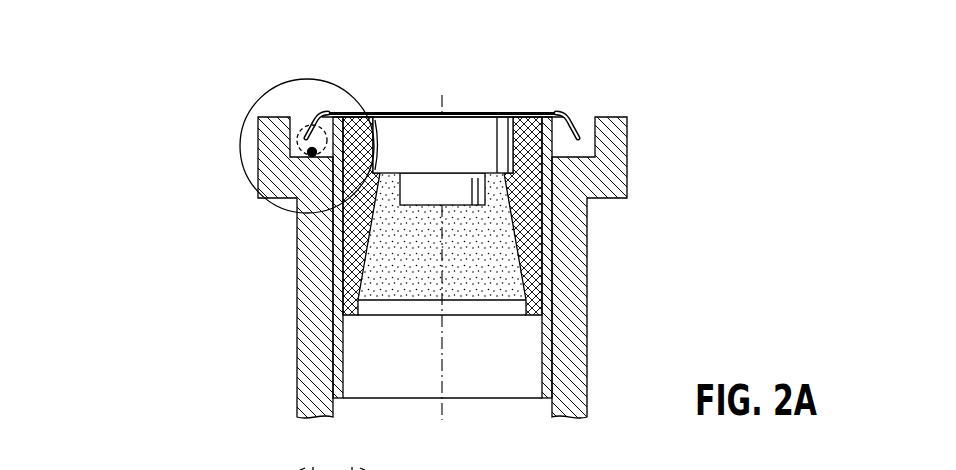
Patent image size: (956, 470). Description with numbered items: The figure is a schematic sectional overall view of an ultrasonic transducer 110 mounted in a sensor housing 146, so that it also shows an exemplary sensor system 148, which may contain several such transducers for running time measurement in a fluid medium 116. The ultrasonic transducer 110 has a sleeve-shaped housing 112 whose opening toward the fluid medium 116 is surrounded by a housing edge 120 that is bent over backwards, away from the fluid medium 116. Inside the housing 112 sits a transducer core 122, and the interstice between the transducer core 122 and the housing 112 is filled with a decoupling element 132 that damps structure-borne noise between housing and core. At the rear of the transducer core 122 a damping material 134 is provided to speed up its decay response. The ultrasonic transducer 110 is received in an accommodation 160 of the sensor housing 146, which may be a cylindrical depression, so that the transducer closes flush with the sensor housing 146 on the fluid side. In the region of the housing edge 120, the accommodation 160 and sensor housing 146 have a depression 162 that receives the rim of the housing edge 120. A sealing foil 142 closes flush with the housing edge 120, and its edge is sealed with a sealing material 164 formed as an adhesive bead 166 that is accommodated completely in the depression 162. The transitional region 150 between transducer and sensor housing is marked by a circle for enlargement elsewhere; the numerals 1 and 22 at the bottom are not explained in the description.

The fuel injection valve 1 is at (332, 460).
The valve element 22 is at (332, 468).
The ultrasonic transducer 110 is at (656, 108).
The housing 112 is at (546, 280).
The fluid medium 116 is at (461, 64).
The housing edge 120 is at (304, 104).
The transducer core 122 is at (500, 159).
The decoupling element 132 is at (530, 248).
The damping material 134 is at (481, 290).
The sealing foil 142 is at (531, 112).
The sensor housing 146 is at (316, 330).
The sensor system 148 is at (656, 70).
The transitional region 150 is at (253, 123).
The accommodation 160 is at (546, 334).
The depression 162 is at (585, 116).
The sealing material 164 is at (286, 159).
The adhesive bead 166 is at (227, 174).